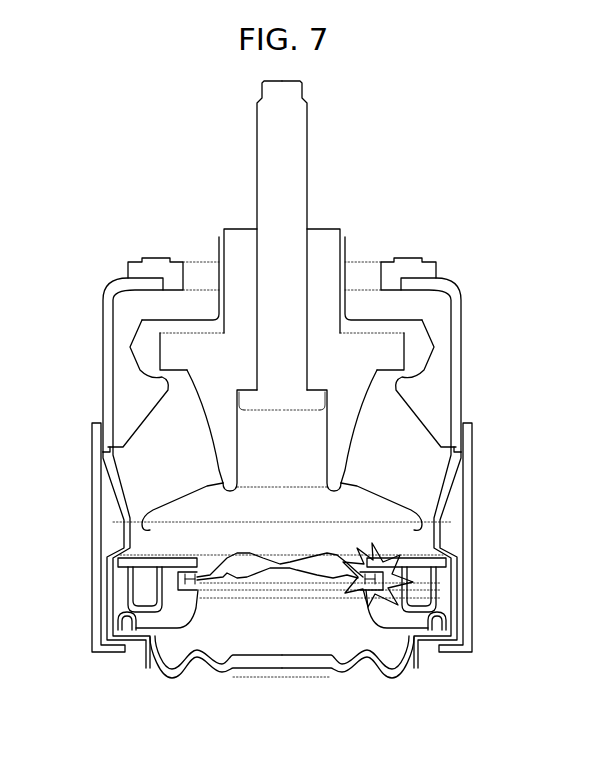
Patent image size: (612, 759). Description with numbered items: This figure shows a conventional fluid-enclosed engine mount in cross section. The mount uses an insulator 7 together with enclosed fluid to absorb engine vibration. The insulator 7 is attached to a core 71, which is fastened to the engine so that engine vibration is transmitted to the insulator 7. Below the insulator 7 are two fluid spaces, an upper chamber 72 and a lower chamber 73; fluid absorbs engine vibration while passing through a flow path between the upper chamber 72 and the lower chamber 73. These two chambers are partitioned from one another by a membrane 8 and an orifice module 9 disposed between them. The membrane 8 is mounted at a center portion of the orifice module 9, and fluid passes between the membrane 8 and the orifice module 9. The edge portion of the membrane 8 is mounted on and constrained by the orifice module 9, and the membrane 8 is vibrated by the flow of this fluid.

The insulator 7 is at (400, 417).
The core 71 is at (365, 342).
The upper chamber 72 is at (393, 521).
The lower chamber 73 is at (403, 670).
The membrane 8 is at (243, 570).
The orifice module 9 is at (120, 592).